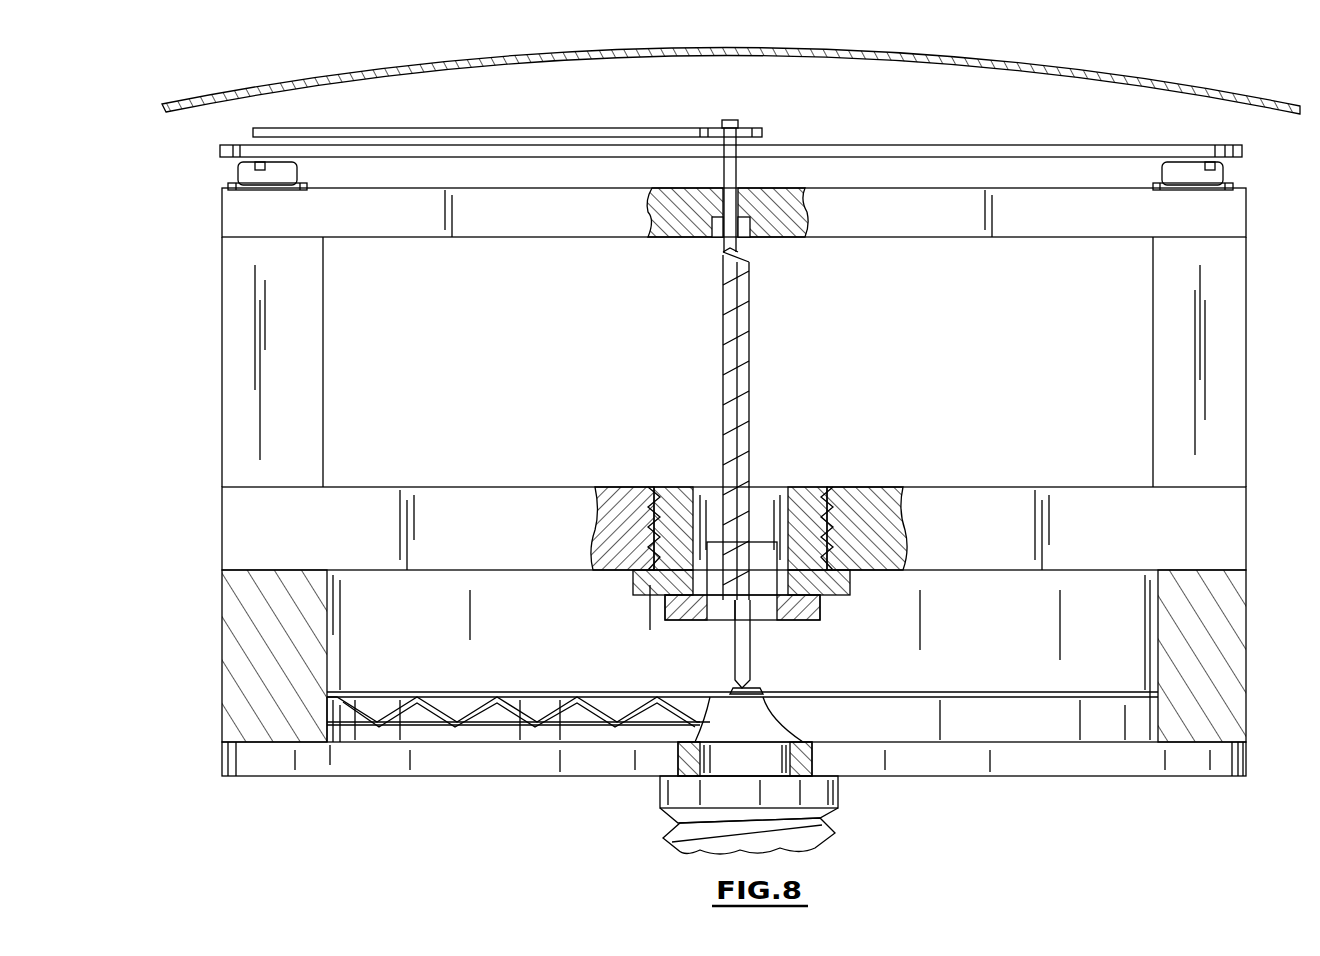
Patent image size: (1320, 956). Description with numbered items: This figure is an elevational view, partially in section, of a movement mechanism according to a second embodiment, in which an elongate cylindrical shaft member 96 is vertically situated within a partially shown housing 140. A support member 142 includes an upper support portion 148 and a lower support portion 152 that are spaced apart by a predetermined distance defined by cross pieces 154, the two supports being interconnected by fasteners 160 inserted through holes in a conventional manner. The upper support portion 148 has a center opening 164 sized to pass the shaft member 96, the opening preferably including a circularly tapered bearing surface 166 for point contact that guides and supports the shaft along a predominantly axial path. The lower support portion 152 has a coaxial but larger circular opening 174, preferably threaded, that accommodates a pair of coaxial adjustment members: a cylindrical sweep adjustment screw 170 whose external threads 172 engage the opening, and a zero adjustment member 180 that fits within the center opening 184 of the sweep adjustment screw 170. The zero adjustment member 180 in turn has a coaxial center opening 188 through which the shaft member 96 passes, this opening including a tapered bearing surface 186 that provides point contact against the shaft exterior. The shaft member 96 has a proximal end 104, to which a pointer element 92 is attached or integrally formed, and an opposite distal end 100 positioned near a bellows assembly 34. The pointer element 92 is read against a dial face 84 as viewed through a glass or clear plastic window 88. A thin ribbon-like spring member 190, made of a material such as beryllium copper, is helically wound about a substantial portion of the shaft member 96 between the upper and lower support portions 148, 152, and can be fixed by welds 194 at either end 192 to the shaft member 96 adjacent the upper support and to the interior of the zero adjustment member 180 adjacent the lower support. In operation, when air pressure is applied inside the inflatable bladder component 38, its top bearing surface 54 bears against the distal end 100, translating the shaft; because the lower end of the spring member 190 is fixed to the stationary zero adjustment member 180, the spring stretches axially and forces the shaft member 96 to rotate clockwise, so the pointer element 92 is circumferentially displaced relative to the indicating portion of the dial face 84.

The bellows assembly 34 is at (1070, 727).
The inflatable bladder component 38 is at (478, 722).
The top bearing surface 54 is at (765, 694).
The dial face 84 is at (1100, 145).
The window 88 is at (455, 58).
The pointer element 92 is at (462, 127).
The shaft member 96 is at (751, 368).
The distal end 100 is at (735, 686).
The proximal end 104 is at (722, 120).
The housing 140 is at (245, 668).
The support member 142 is at (232, 266).
The upper support portion 148 is at (1232, 218).
The lower support portion 152 is at (245, 548).
The cross pieces 154 is at (240, 393).
The fasteners 160 is at (248, 172).
The center opening 164 is at (748, 237).
The tapered bearing surface 166 is at (745, 188).
The sweep adjustment screw 170 is at (635, 487).
The external threads 172 is at (598, 490).
The circular opening 174 is at (825, 487).
The zero adjustment member 180 is at (792, 622).
The center opening 184 is at (778, 487).
The tapered bearing surface 186 is at (752, 622).
The center opening 188 is at (718, 487).
The spring member 190 is at (751, 330).
The ends 192 is at (750, 262).
The welds 194 is at (722, 252).